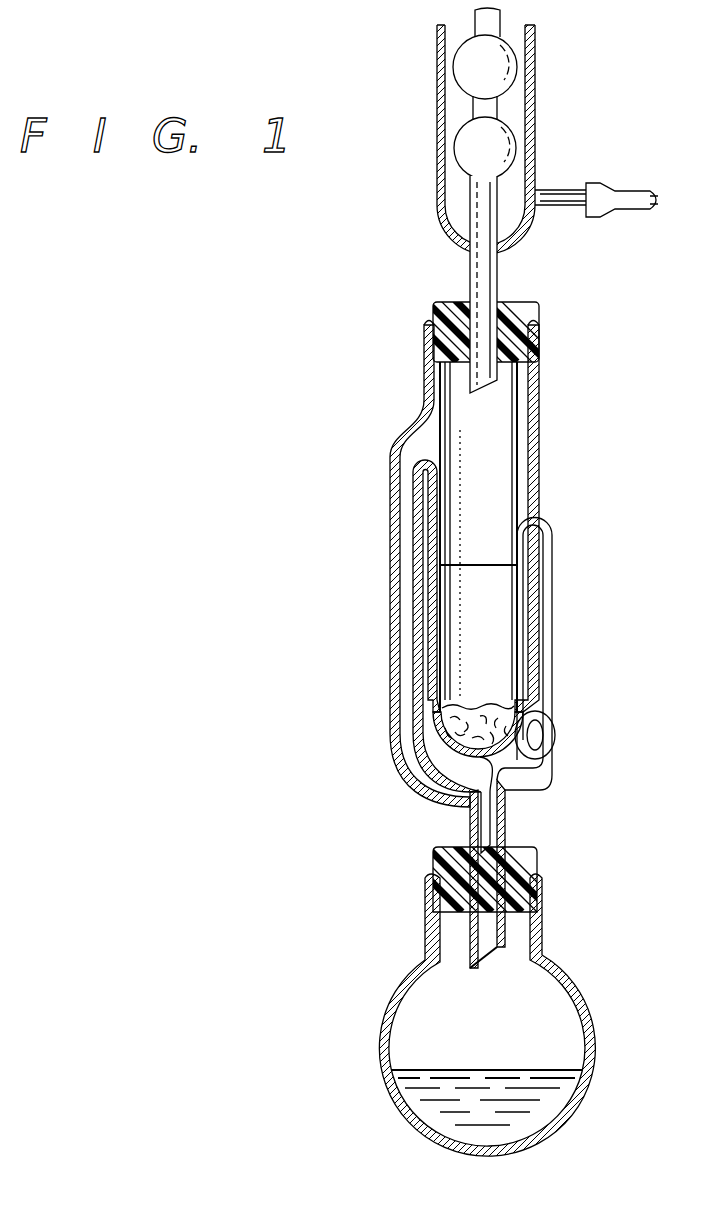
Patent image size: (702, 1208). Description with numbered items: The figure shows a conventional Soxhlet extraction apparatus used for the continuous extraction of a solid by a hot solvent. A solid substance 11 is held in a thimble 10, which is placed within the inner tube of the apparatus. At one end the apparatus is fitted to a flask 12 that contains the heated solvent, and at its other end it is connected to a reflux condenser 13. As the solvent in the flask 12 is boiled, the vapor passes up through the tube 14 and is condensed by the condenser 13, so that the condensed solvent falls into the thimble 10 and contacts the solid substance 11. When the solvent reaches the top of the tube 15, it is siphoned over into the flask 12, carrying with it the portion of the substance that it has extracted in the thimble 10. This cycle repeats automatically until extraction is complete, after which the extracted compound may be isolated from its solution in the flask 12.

The thimble 10 is at (440, 597).
The solid substance 11 is at (492, 706).
The flask 12 is at (608, 952).
The reflux condenser 13 is at (588, 100).
The tube 14 is at (396, 755).
The tube 15 is at (547, 520).